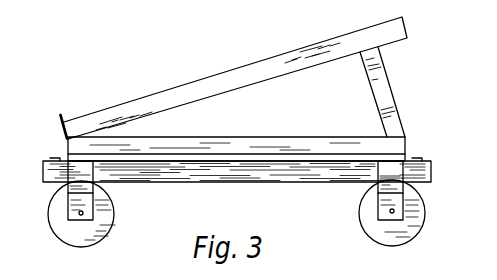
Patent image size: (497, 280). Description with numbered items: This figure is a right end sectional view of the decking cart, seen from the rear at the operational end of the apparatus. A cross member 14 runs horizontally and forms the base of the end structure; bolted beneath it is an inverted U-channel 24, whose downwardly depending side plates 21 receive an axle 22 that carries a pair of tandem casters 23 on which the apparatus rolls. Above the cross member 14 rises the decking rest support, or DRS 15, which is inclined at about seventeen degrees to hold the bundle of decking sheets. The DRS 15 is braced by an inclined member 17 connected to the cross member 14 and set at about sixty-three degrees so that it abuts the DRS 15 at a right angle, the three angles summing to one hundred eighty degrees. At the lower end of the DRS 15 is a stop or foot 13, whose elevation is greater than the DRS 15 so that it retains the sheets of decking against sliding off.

The stop or foot 13 is at (62, 115).
The cross member 14 is at (267, 137).
The DRS (decking rest support) 15 is at (257, 70).
The inclined member 17 is at (386, 97).
The side plates 21 is at (394, 197).
The axle 22 is at (79, 213).
The tandem casters 23 is at (407, 228).
The inverted U-channel 24 is at (318, 182).